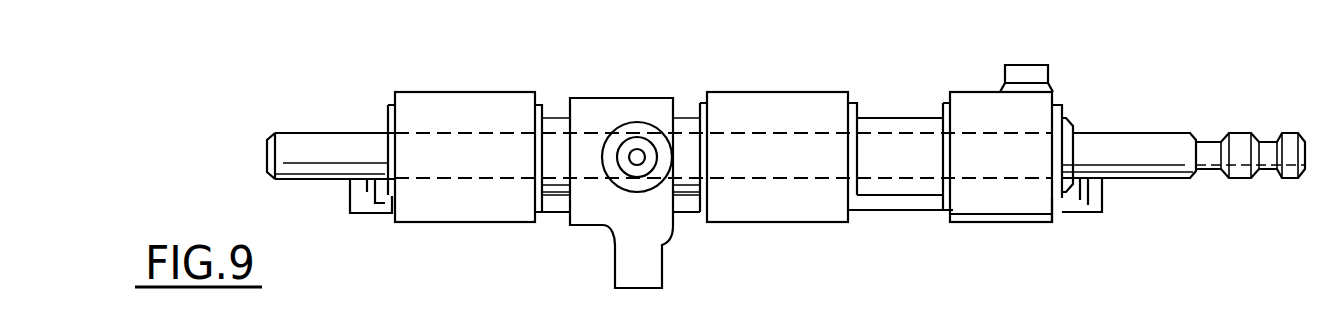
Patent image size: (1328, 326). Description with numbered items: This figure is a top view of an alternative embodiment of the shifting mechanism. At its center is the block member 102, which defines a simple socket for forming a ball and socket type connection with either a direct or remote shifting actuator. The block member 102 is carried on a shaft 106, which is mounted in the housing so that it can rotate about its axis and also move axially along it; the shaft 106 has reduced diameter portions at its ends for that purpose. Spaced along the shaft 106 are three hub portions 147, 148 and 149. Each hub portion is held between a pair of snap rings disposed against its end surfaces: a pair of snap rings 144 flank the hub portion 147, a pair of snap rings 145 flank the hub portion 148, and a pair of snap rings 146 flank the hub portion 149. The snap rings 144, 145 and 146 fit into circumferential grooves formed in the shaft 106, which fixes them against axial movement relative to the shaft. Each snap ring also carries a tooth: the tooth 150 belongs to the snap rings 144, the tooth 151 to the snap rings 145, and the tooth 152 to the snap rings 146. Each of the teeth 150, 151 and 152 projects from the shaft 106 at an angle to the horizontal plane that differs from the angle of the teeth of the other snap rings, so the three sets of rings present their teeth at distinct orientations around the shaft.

The block member 102 is at (608, 105).
The shaft 106 is at (1128, 151).
The snap rings 144 is at (374, 200).
The snap rings 145 is at (857, 187).
The snap rings 146 is at (1057, 186).
The hub portion 147 is at (457, 108).
The hub portion 148 is at (765, 102).
The hub portion 149 is at (982, 103).
The tooth 150 is at (387, 103).
The tooth 151 is at (702, 102).
The tooth 152 is at (943, 103).